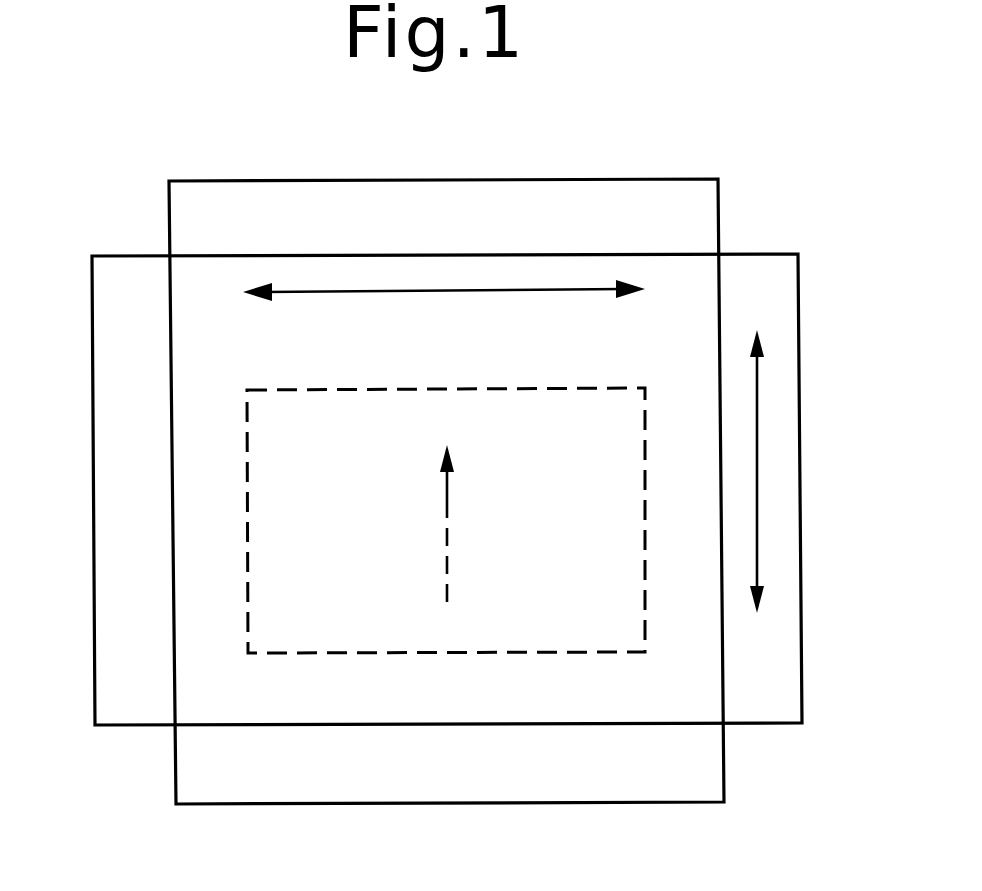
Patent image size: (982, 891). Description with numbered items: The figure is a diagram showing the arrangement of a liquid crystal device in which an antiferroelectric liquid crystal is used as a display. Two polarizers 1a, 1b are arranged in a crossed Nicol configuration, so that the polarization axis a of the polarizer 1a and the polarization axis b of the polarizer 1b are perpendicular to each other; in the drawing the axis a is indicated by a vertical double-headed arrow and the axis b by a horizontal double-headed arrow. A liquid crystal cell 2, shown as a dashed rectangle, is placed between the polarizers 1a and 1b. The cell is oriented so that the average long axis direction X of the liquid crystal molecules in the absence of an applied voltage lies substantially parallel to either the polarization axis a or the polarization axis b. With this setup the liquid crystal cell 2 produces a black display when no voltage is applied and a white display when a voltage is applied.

The polarizer 1a is at (752, 268).
The polarizer 1b is at (660, 198).
The liquid crystal cell 2 is at (253, 549).
The polarization axis a is at (757, 452).
The polarization axis b is at (328, 290).
The average long axis direction X is at (448, 572).